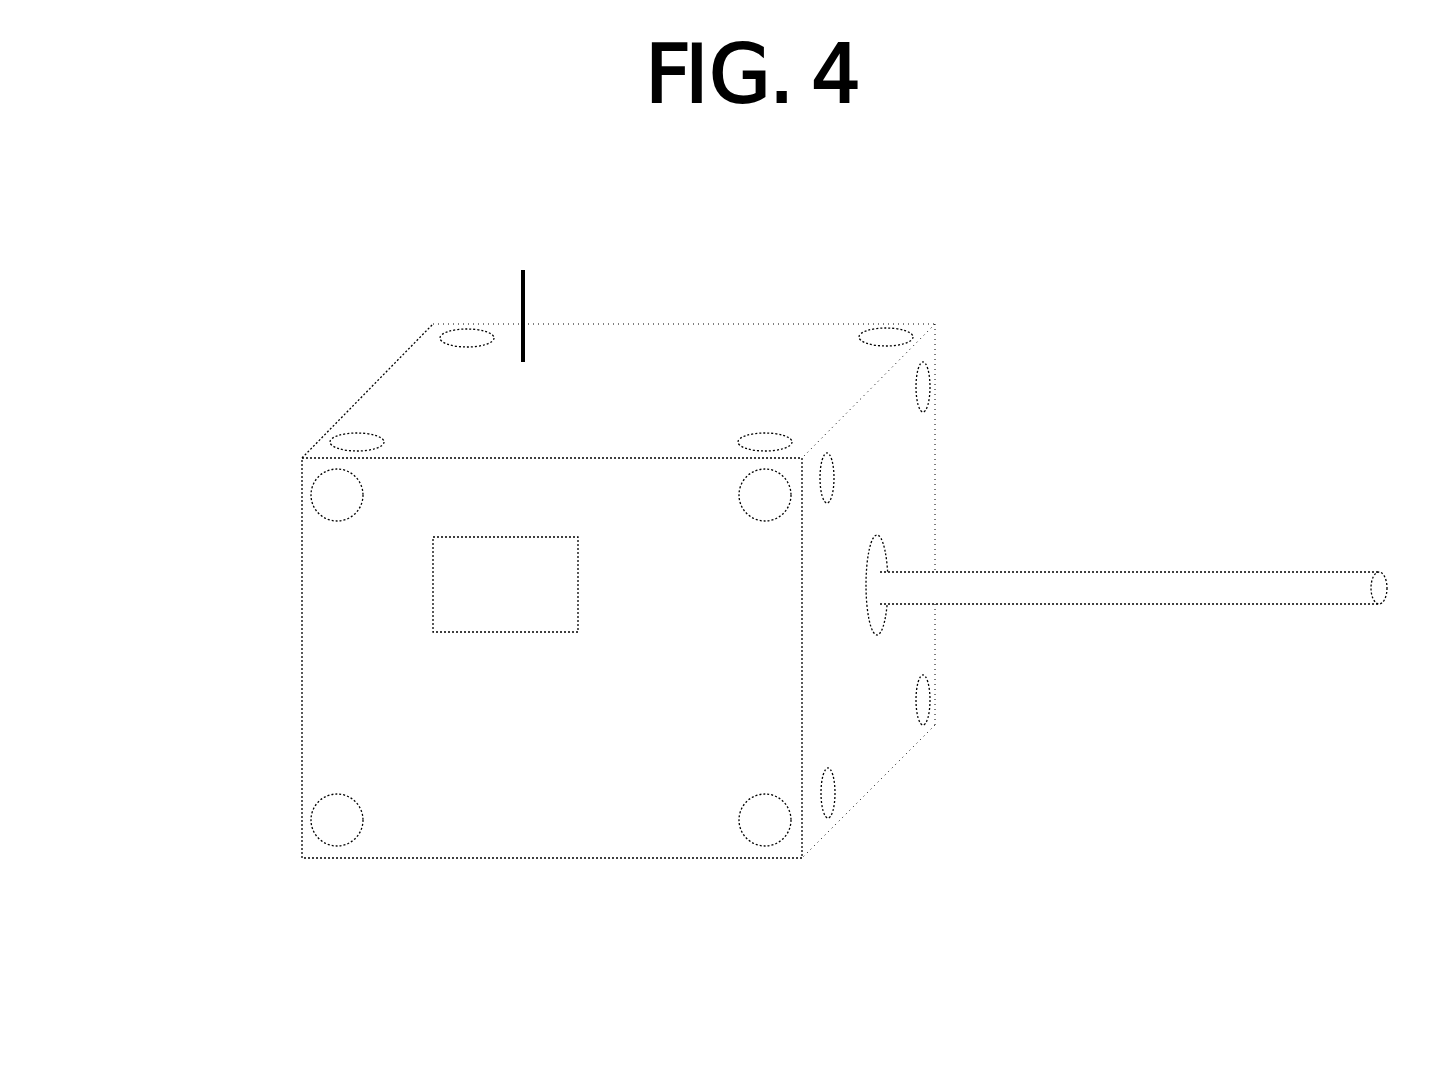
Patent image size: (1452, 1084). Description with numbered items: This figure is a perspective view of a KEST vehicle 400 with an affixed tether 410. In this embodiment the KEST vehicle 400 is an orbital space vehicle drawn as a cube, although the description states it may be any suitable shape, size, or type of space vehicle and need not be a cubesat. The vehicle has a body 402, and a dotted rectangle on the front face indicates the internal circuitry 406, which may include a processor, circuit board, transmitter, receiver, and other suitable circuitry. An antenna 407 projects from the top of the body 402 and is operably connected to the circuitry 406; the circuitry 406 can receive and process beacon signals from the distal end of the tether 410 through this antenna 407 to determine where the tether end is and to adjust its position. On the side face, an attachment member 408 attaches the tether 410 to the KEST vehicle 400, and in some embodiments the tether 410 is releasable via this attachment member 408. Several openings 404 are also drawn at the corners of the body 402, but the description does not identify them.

The KEST vehicle 400 is at (308, 153).
The body 402 is at (368, 696).
The mounting holes 404 is at (887, 328).
The internal circuitry 406 is at (505, 632).
The antenna 407 is at (522, 302).
The attachment member 408 is at (887, 550).
The tether 410 is at (1092, 572).